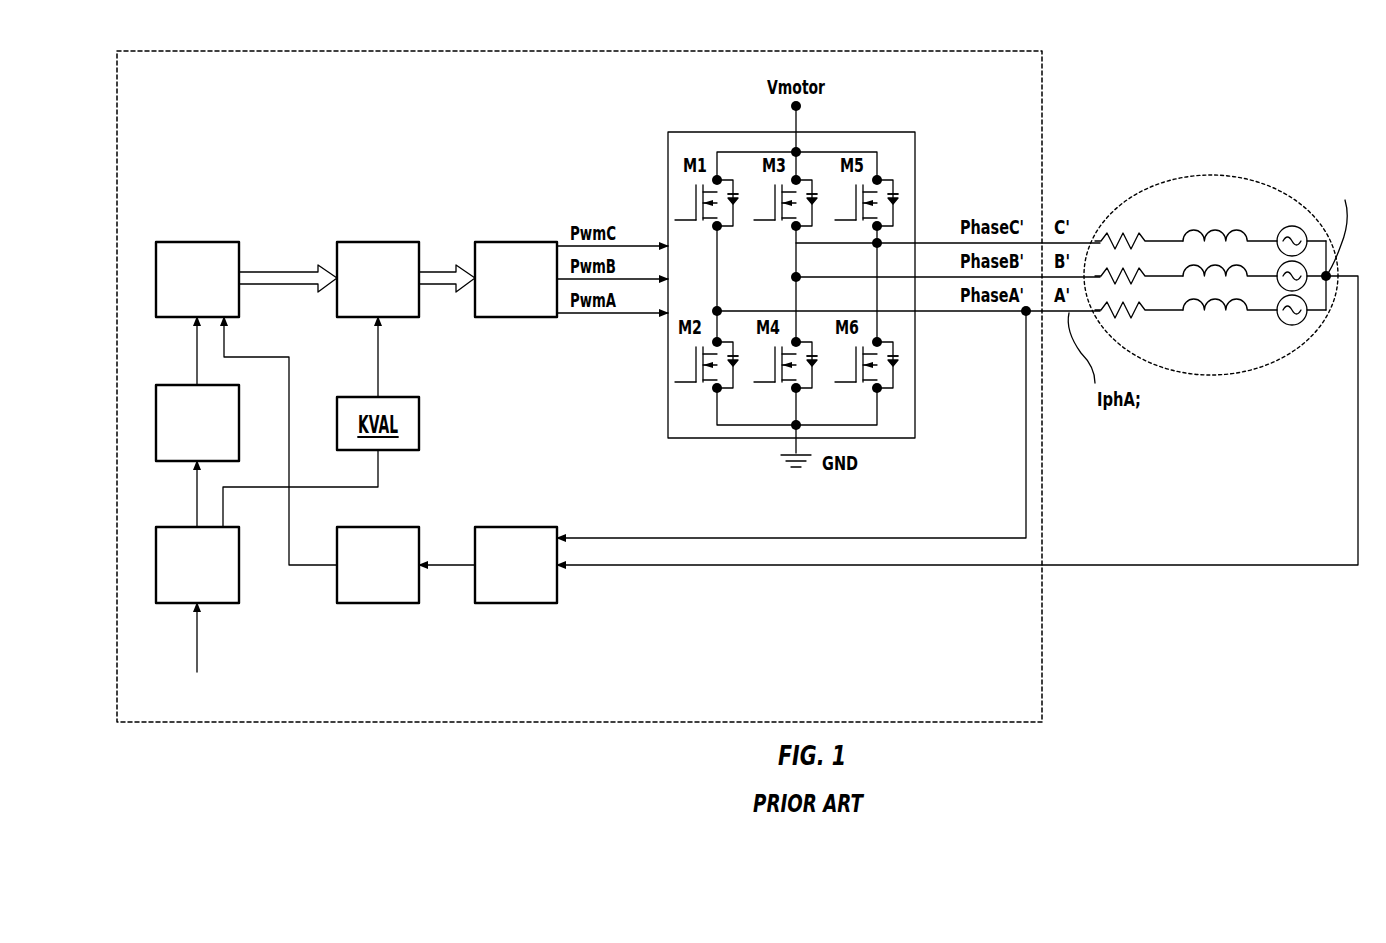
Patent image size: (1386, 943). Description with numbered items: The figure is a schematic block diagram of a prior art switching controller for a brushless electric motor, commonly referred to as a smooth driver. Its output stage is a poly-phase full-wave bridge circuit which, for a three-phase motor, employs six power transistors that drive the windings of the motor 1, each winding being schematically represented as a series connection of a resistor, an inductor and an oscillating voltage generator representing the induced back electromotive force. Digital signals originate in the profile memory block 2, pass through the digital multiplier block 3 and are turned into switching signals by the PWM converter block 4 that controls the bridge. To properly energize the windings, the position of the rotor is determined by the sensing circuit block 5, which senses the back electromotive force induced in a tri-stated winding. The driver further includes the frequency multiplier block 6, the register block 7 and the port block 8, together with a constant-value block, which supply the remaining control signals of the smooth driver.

The three-phase motor 1 is at (1226, 176).
The profile memory block 2 is at (208, 242).
The digital multiplier block 3 is at (389, 242).
The PWM converter block 4 is at (533, 242).
The back electromotive force sensing circuit block 5 is at (502, 526).
The frequency multiplier block 6 is at (376, 526).
The register block 7 is at (154, 400).
The port block 8 is at (154, 538).